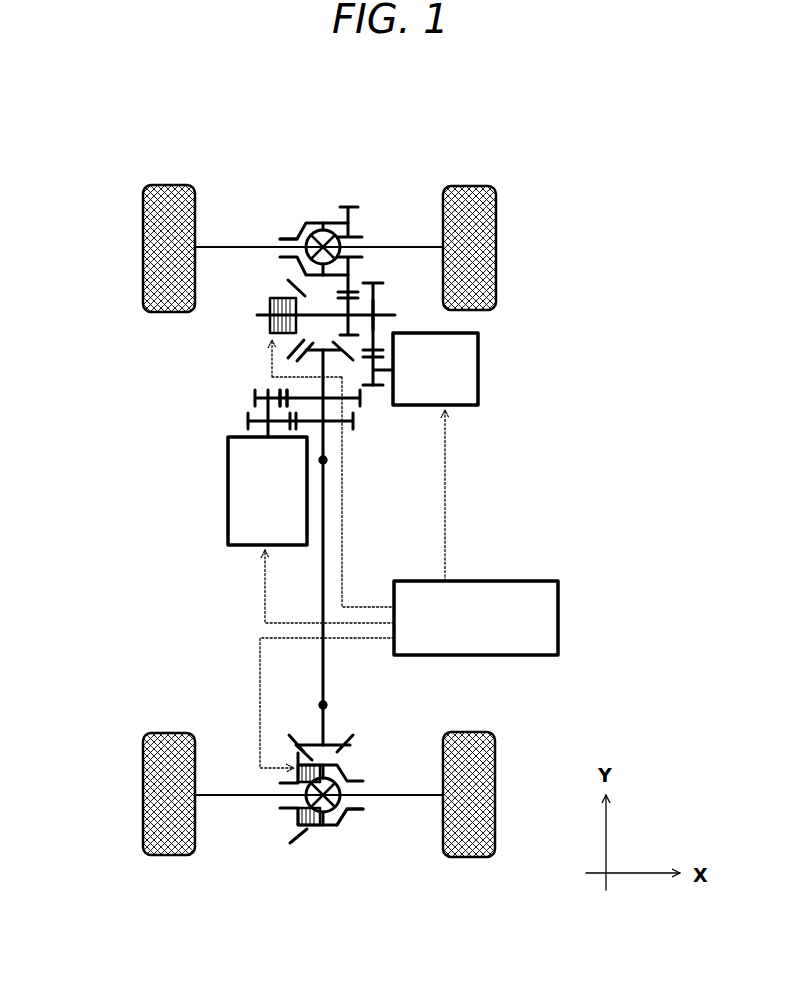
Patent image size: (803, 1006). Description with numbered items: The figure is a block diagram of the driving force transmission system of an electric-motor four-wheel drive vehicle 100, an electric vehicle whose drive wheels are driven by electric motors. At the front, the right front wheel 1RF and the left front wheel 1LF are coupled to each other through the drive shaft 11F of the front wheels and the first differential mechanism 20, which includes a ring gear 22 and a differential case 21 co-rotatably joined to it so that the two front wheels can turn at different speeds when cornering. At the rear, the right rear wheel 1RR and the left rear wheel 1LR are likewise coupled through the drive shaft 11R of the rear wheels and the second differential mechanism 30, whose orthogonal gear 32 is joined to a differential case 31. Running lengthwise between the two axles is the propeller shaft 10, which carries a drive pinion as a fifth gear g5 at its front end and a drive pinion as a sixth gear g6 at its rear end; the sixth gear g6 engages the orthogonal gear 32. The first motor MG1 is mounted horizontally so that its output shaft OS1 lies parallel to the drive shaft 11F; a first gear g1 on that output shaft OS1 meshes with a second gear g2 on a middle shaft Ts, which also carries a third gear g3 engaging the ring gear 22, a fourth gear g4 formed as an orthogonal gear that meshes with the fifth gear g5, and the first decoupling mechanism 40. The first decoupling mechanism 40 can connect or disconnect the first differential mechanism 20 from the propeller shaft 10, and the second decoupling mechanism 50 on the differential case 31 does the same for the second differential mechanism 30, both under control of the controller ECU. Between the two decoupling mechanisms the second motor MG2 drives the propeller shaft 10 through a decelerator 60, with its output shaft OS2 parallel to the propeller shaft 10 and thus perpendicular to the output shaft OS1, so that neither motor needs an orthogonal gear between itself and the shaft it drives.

The electric-motor four-wheel drive vehicle 100 is at (620, 125).
The left front wheel 1LF is at (145, 185).
The right front wheel 1RF is at (470, 205).
The left rear wheel 1LR is at (160, 842).
The right rear wheel 1RR is at (463, 850).
The drive shaft of the front wheels 11F is at (233, 250).
The drive shaft of the rear wheels 11R is at (232, 795).
The first differential mechanism 20 is at (314, 212).
The differential case 21 is at (297, 239).
The ring gear 22 is at (350, 207).
The first decoupling mechanism 40 is at (262, 318).
The middle shaft Ts is at (398, 318).
The fourth gear g4 is at (287, 280).
The propeller shaft 10 is at (326, 665).
The second gear g2 is at (375, 283).
The third gear g3 is at (376, 306).
The first gear g1 is at (372, 387).
The output shaft of the first motor OS1 is at (387, 372).
The first motor MG1 is at (480, 385).
The decelerator 60 is at (234, 404).
The fifth gear g5 is at (263, 370).
The output shaft of the second motor OS2 is at (250, 426).
The second motor MG2 is at (228, 520).
The controller ECU is at (478, 581).
The sixth gear g6 is at (357, 744).
The second differential mechanism 30 is at (368, 821).
The differential case 31 is at (345, 823).
The orthogonal gear 32 is at (290, 846).
The second decoupling mechanism 50 is at (312, 830).